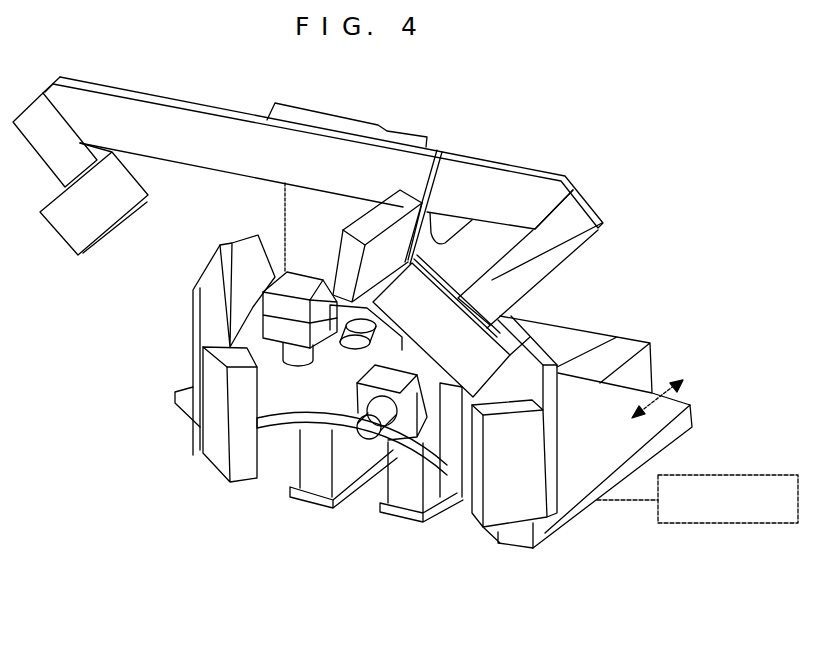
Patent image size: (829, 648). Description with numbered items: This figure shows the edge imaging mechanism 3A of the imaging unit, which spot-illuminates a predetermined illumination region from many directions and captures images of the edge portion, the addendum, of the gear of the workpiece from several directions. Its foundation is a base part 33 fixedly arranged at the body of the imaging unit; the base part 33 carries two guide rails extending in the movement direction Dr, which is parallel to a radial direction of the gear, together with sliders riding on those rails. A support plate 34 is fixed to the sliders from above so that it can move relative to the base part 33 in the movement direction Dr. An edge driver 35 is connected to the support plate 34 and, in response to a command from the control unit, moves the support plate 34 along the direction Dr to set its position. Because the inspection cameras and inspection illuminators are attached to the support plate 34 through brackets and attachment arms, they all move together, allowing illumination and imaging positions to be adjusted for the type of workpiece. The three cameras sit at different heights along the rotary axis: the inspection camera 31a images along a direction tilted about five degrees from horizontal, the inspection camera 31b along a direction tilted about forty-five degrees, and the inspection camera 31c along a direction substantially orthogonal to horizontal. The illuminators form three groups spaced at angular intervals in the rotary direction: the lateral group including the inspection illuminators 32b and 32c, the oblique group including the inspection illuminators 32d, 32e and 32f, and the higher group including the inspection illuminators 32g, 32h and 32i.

The edge imaging mechanism 3A is at (633, 84).
The inspection camera 31a is at (373, 430).
The inspection camera 31b is at (353, 343).
The inspection camera 31c is at (295, 355).
The inspection illuminator 32b is at (455, 490).
The inspection illuminator 32c is at (215, 450).
The inspection illuminator 32d is at (473, 353).
The inspection illuminator 32e is at (422, 244).
The inspection illuminator 32f is at (228, 290).
The inspection illuminator 32g is at (605, 223).
The inspection illuminator 32h is at (398, 201).
The inspection illuminator 32i is at (73, 230).
The base part 33 is at (617, 348).
The support plate 34 is at (682, 422).
The edge driver 35 is at (763, 475).